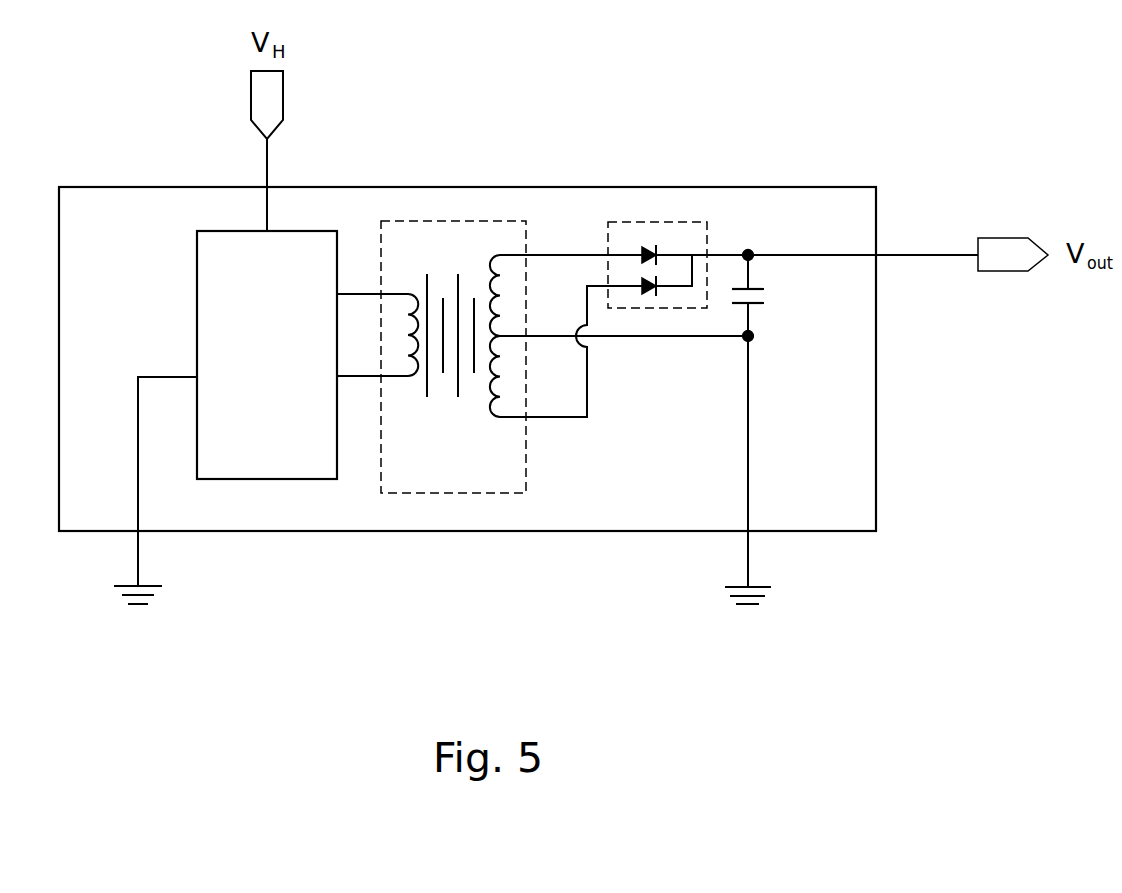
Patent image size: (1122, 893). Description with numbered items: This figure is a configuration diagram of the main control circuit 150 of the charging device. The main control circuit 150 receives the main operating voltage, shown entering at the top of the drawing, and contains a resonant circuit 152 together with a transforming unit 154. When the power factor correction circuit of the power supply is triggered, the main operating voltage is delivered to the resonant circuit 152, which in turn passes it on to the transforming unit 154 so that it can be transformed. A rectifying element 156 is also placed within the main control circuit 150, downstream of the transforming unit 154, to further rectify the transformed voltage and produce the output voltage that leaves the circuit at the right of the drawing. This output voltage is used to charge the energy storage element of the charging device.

The main control circuit 150 is at (820, 187).
The resonant circuit 152 is at (242, 406).
The transforming unit 154 is at (477, 222).
The rectifying element 156 is at (668, 222).